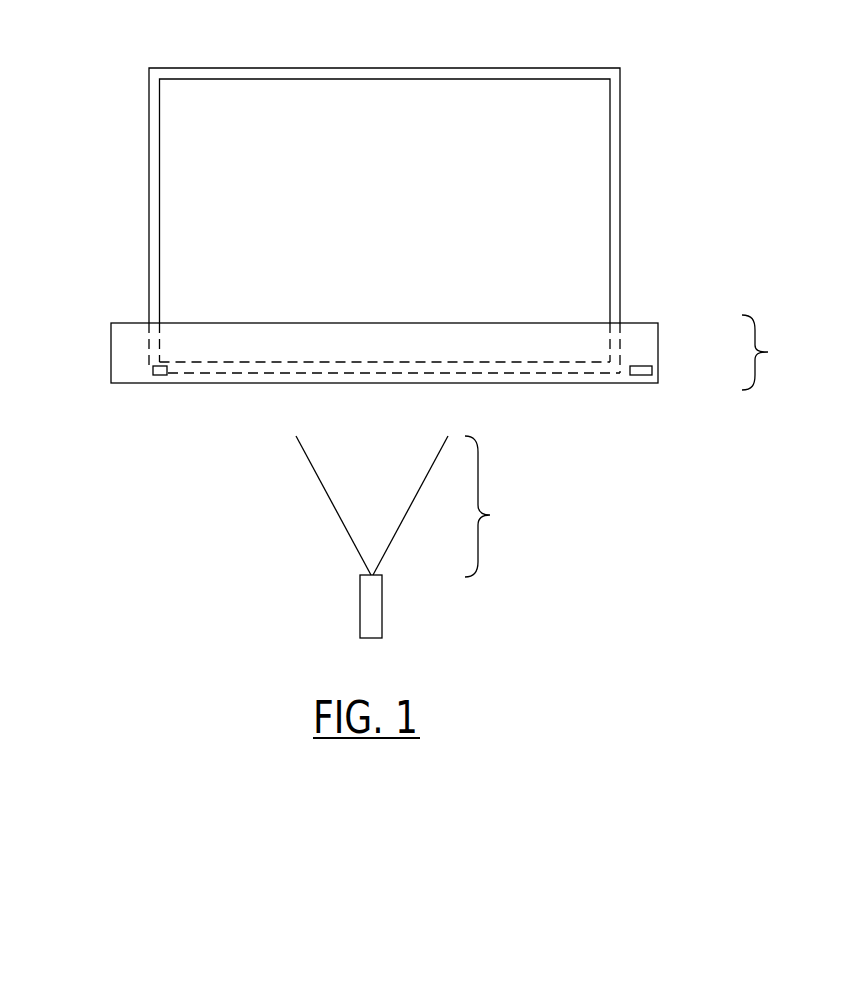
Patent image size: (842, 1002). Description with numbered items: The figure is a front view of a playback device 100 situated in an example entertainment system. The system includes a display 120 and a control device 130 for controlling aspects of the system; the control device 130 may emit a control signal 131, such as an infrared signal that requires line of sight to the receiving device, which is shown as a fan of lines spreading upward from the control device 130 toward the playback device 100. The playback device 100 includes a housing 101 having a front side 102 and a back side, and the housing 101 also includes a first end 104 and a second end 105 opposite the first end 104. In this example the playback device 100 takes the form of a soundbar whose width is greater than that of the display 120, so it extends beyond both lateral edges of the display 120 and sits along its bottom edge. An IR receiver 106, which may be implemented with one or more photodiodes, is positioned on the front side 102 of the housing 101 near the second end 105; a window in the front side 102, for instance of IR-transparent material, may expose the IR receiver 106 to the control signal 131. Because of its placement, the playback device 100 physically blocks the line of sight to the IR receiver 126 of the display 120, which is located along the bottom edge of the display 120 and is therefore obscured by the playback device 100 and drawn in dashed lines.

The playback device 100 is at (773, 352).
The housing 101 is at (632, 323).
The front side 102 is at (125, 363).
The first end 104 is at (111, 335).
The second end 105 is at (660, 353).
The IR receiver 106 is at (638, 377).
The display 120 is at (540, 68).
The IR receiver of the display 126 is at (157, 378).
The control device 130 is at (385, 605).
The control signal 131 is at (412, 506).